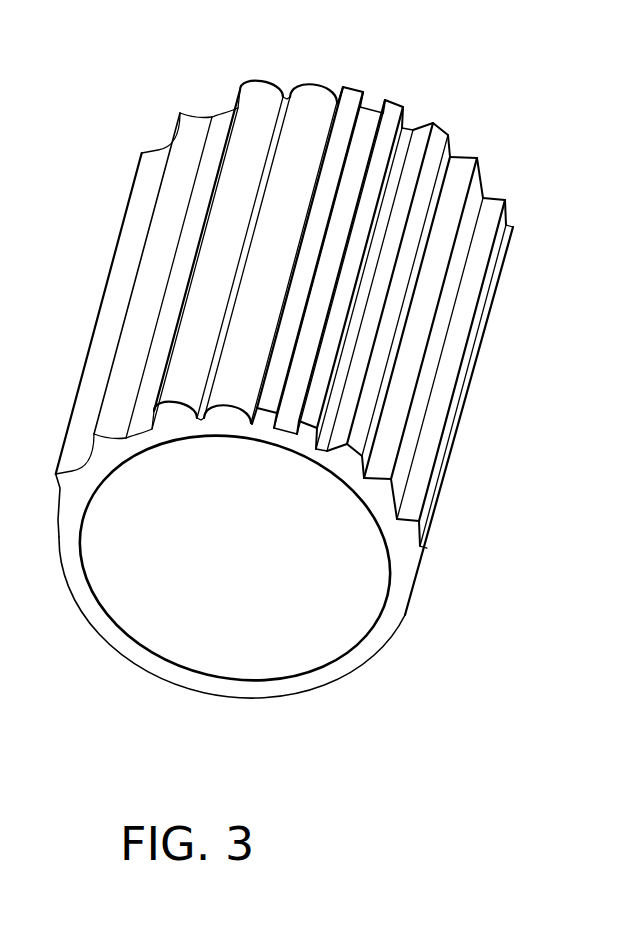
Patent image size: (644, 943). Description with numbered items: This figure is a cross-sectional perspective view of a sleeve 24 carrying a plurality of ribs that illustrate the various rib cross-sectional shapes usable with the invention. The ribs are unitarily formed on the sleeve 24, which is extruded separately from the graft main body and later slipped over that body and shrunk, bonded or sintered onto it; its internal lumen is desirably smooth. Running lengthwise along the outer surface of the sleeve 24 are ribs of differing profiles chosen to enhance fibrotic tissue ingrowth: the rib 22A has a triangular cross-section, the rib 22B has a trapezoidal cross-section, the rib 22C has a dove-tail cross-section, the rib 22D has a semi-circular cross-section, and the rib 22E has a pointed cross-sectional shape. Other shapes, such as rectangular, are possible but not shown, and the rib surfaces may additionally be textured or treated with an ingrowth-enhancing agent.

The rib having a triangular cross-section 22A is at (502, 238).
The rib having a trapezoidal cross-section 22B is at (480, 173).
The rib having a dove-tail cross-section 22C is at (398, 110).
The rib having a semi-circular cross-section 22D is at (255, 92).
The rib having a pointed cross-sectional shape 22E is at (178, 113).
The sleeve 24 is at (358, 670).